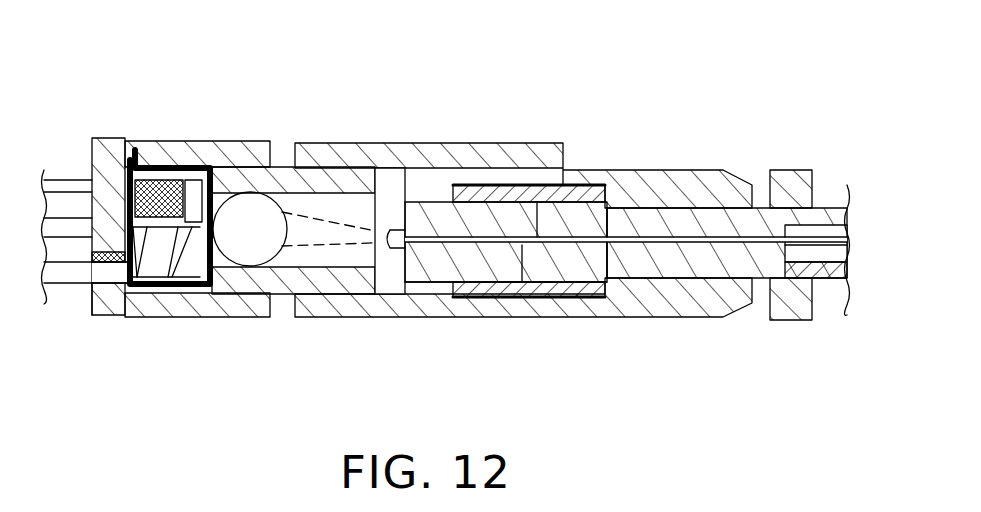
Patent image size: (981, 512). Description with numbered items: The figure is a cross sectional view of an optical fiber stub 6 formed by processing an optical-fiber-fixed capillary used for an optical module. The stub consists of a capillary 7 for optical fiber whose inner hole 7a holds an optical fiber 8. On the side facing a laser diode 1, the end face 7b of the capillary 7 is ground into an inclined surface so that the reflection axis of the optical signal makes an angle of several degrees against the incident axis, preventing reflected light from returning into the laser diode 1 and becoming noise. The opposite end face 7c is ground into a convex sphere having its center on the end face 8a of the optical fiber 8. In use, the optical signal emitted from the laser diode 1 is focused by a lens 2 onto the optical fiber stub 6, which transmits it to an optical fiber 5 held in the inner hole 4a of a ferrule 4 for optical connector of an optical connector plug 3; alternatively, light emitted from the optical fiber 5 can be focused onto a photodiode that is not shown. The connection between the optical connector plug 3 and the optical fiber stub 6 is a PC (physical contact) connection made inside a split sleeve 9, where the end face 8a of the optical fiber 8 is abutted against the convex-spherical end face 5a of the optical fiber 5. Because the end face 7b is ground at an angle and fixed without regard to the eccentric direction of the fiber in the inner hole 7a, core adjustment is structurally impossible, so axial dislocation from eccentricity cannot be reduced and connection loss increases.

The laser diode 1 is at (183, 227).
The lens 2 is at (250, 212).
The optical connector plug 3 is at (791, 170).
The ferrule for optical connector 4 is at (687, 206).
The inner hole of the ferrule 4a is at (630, 278).
The optical fiber 5 is at (755, 278).
The convex-spherical end face of the optical fiber 5a is at (565, 296).
The optical fiber stub 6 is at (432, 200).
The capillary for optical fiber 7 is at (480, 200).
The inner hole of the capillary 7a is at (476, 282).
The end face of the capillary 7b is at (395, 225).
The end face of the capillary 7c is at (553, 190).
The optical fiber 8 is at (400, 255).
The end face of the optical fiber 8a is at (522, 262).
The split sleeve 9 is at (527, 197).